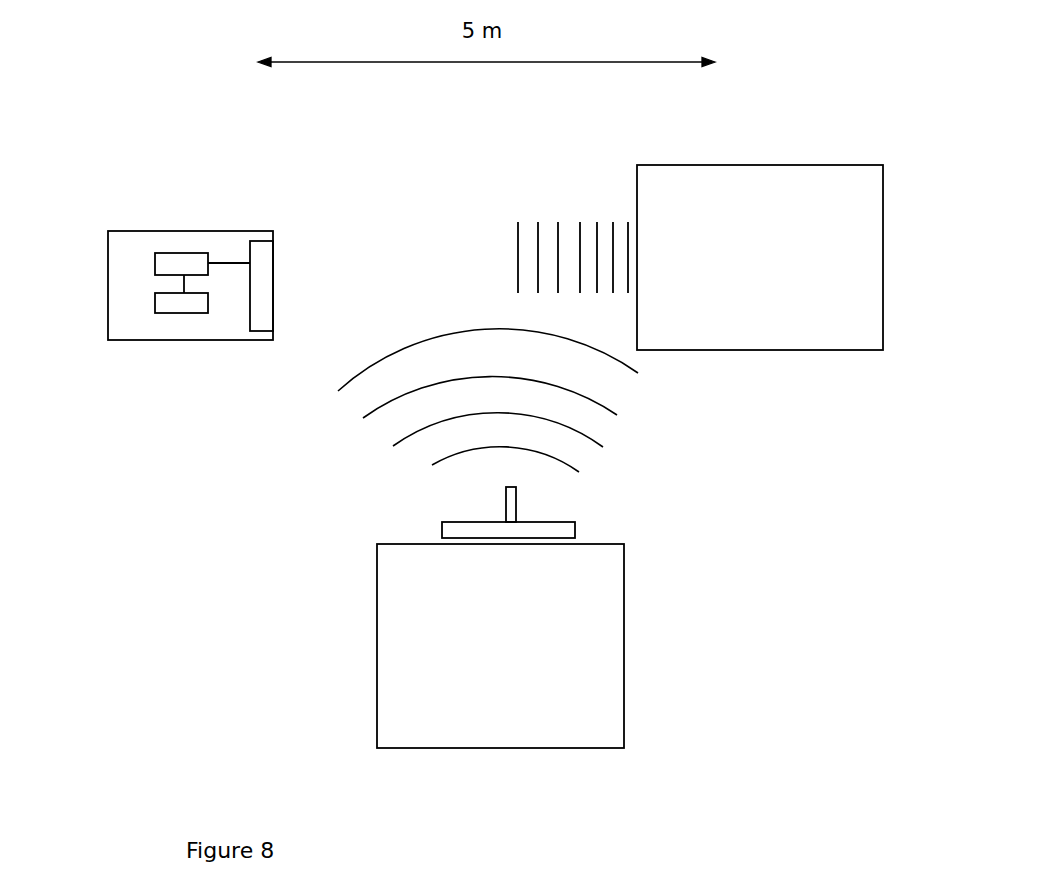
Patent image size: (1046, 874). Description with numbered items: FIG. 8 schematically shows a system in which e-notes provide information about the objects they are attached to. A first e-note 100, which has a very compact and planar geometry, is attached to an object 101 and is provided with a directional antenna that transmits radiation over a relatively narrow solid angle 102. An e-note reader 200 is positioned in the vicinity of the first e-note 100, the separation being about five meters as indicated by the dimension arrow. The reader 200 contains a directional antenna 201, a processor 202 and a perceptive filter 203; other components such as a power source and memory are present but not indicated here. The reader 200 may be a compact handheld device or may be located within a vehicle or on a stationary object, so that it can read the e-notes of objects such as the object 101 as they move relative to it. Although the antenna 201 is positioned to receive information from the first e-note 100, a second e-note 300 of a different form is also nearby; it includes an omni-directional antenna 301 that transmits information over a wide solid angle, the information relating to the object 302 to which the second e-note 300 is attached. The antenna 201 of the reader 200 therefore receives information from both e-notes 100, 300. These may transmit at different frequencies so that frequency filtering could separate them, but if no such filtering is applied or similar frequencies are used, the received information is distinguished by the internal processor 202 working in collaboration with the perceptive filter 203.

The first e-note 100 is at (627, 220).
The object 101 is at (732, 261).
The narrow solid angle 102 is at (560, 218).
The e-note reader 200 is at (186, 232).
The directional antenna 201 is at (267, 257).
The processor 202 is at (165, 263).
The perceptive filter 203 is at (160, 303).
The second e-note 300 is at (574, 501).
The omni-directional antenna 301 is at (508, 509).
The object 302 is at (485, 651).